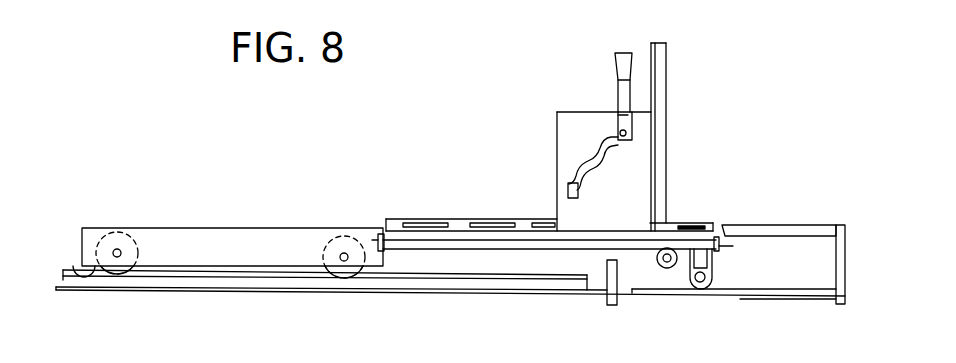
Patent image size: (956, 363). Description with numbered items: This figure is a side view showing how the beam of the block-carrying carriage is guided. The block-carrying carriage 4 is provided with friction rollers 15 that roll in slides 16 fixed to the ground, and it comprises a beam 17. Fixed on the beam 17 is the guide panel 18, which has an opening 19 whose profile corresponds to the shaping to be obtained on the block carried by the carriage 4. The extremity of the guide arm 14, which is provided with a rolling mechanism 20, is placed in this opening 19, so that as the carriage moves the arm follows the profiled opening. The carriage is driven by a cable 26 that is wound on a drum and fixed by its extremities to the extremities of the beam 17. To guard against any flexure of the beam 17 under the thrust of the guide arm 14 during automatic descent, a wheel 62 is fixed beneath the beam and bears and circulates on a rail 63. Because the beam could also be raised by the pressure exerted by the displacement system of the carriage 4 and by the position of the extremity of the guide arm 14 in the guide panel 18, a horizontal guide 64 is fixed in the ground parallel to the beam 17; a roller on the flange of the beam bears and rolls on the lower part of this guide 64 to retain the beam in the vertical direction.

The block-carrying carriage 4 is at (210, 246).
The guide arm 14 is at (624, 66).
The friction rollers 15 is at (72, 269).
The slides 16 is at (196, 280).
The beam 17 is at (410, 233).
The guide panel 18 is at (585, 132).
The opening 19 is at (568, 182).
The rolling mechanism 20 is at (626, 131).
The cable 26 is at (558, 252).
The wheel 62 is at (674, 298).
The rail 63 is at (782, 294).
The horizontal guide 64 is at (785, 236).